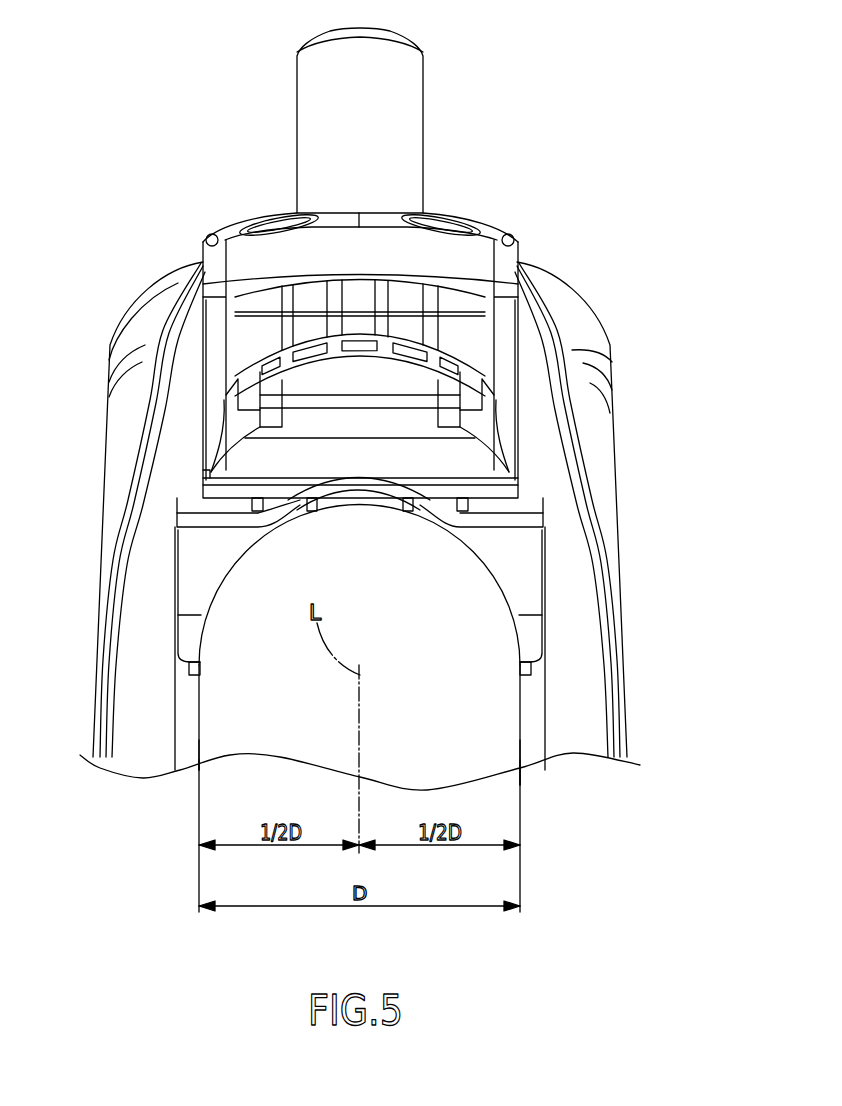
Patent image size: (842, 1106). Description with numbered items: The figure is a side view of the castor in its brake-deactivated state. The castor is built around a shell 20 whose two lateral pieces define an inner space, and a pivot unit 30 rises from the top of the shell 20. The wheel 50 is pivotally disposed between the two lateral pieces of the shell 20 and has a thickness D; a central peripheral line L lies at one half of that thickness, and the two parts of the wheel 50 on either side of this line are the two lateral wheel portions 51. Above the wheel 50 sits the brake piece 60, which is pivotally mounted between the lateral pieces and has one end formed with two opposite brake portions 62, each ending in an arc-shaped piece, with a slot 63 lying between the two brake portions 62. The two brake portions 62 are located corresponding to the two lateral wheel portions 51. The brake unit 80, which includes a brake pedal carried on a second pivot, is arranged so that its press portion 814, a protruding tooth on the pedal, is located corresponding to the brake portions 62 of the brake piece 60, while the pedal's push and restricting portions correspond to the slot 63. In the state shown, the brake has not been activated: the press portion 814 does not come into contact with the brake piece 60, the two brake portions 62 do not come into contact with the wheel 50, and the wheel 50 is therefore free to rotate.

The shell 20 is at (612, 425).
The pivot unit 30 is at (430, 191).
The brake unit 80 is at (518, 357).
The press portion 814 is at (216, 492).
The brake piece 60 is at (545, 520).
The brake portions 62 is at (433, 510).
The slot 63 is at (394, 500).
The wheel 50 is at (514, 738).
The lateral wheel portions 51 is at (207, 733).